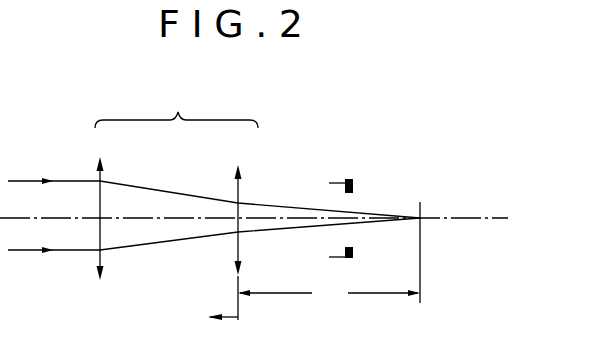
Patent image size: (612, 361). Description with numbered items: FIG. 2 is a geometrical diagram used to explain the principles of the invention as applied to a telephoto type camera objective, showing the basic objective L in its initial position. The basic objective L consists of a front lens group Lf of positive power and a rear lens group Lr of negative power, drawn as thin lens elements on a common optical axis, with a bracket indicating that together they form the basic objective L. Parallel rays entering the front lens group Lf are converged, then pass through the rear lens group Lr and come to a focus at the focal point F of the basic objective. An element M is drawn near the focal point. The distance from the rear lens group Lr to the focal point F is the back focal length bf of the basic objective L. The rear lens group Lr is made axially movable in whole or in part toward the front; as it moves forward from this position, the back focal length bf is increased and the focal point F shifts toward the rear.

The basic objective L is at (176, 104).
The front lens group Lf is at (110, 137).
The rear lens group Lr is at (238, 166).
The mask / stop M is at (354, 184).
The focal point F is at (420, 237).
The back focal length bf is at (314, 298).